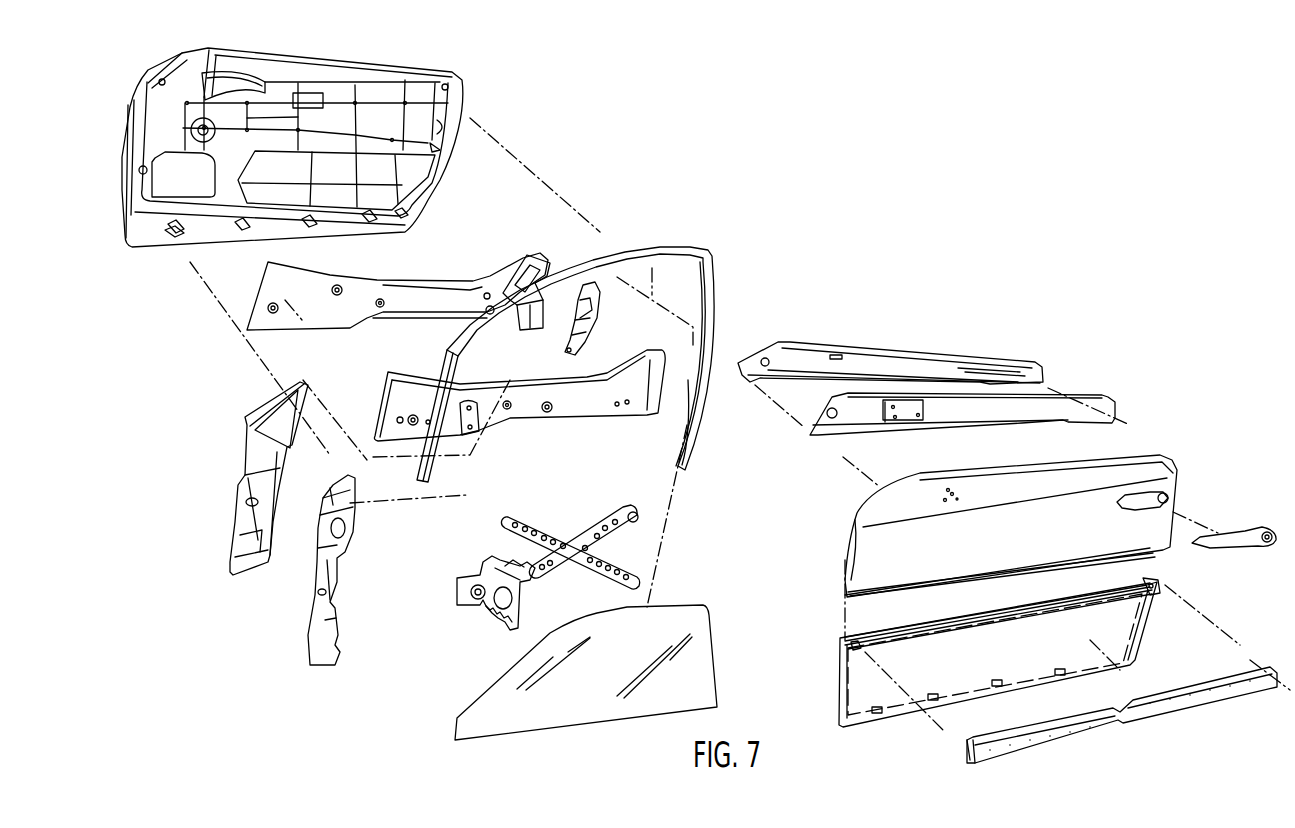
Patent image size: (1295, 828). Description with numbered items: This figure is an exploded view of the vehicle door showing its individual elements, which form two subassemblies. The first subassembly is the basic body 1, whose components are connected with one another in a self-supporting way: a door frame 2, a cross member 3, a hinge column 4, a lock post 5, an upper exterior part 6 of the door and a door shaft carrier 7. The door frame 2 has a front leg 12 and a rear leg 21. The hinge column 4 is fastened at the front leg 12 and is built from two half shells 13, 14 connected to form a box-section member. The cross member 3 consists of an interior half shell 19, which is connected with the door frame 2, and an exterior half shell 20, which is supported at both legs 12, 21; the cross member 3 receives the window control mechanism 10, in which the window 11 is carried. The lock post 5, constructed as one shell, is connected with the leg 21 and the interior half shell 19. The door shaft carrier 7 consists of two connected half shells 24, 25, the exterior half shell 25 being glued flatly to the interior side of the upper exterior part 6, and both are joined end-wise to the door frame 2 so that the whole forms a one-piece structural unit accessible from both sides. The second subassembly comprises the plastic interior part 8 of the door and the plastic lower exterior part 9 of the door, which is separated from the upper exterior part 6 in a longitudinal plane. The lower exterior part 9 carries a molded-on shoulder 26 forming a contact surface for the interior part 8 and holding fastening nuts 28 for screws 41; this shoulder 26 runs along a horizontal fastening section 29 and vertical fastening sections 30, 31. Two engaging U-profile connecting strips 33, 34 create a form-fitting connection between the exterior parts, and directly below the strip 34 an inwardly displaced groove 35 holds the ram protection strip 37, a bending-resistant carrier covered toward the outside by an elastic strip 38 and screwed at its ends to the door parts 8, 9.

The basic body 1 is at (647, 222).
The door frame 2 is at (680, 250).
The cross member 3 is at (509, 334).
The hinge column 4 is at (298, 603).
The lock post 5 is at (590, 325).
The upper exterior part of the door 6 is at (1165, 466).
The door shaft carrier 7 is at (1068, 368).
The interior part of the door 8 is at (443, 112).
The lower exterior part of the door 9 is at (902, 683).
The window control mechanism 10 is at (639, 540).
The window 11 is at (700, 613).
The leg of the door frame 12 is at (436, 452).
The half shell 13 is at (273, 413).
The half shell 14 is at (345, 560).
The interior half shell of the cross member 19 is at (448, 295).
The exterior half shell of the cross member 20 is at (640, 407).
The leg of the door frame 21 is at (706, 418).
The half shell 24 is at (980, 362).
The exterior half shell 25 is at (1093, 402).
The molded-on shoulder 26 is at (958, 690).
The fastening nuts 28 is at (864, 728).
The horizontal fastening section 29 is at (1007, 694).
The vertical fastening section 30 is at (838, 683).
The vertical fastening section 31 is at (1160, 620).
The connecting strip 33 is at (906, 589).
The connecting strip 34 is at (1147, 581).
The groove 35 is at (1057, 610).
The ram protection strip 37 is at (966, 750).
The elastic strip 38 is at (1018, 741).
The screws 41 is at (165, 232).